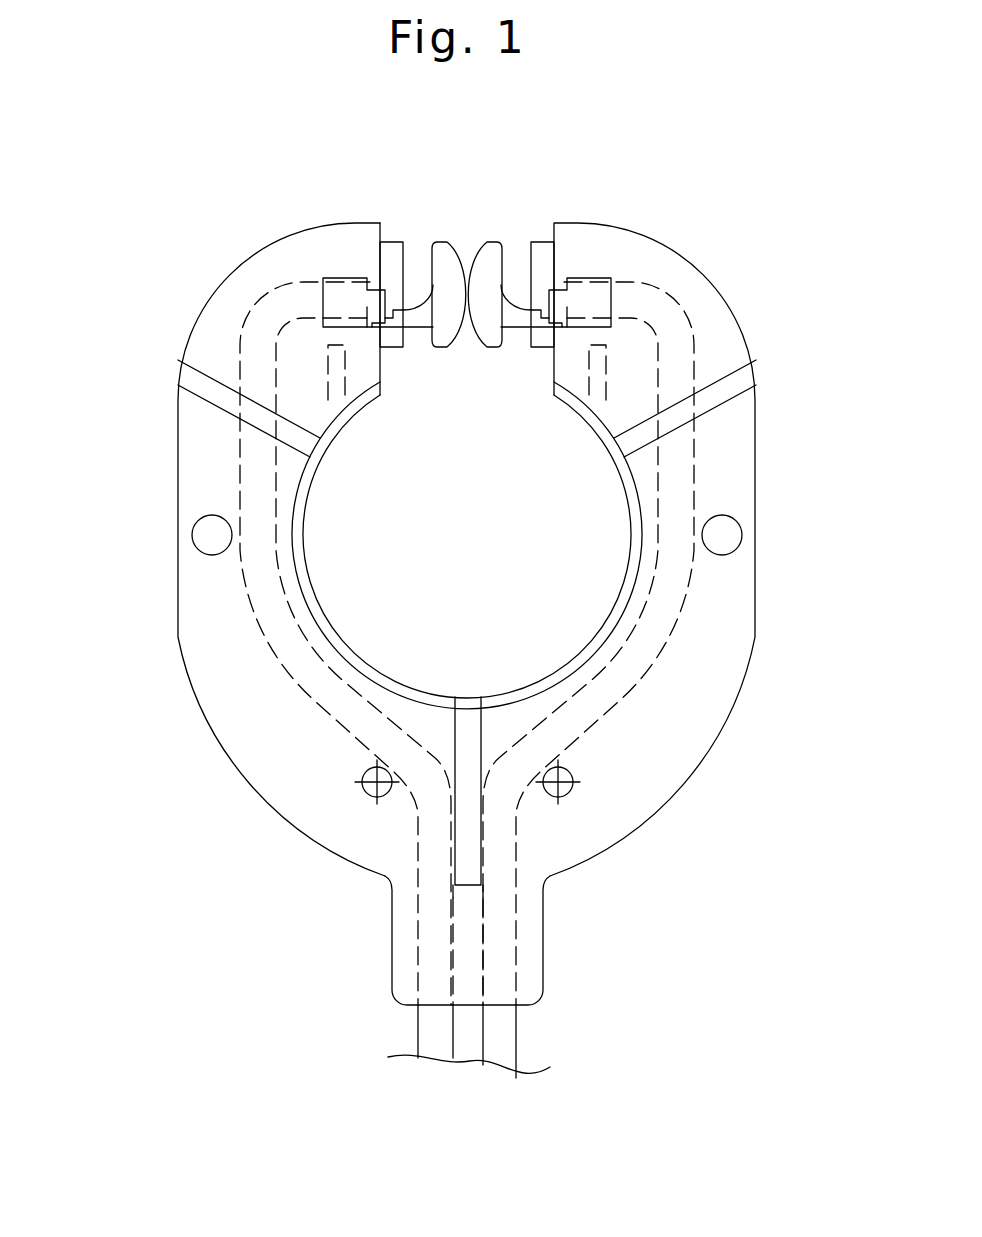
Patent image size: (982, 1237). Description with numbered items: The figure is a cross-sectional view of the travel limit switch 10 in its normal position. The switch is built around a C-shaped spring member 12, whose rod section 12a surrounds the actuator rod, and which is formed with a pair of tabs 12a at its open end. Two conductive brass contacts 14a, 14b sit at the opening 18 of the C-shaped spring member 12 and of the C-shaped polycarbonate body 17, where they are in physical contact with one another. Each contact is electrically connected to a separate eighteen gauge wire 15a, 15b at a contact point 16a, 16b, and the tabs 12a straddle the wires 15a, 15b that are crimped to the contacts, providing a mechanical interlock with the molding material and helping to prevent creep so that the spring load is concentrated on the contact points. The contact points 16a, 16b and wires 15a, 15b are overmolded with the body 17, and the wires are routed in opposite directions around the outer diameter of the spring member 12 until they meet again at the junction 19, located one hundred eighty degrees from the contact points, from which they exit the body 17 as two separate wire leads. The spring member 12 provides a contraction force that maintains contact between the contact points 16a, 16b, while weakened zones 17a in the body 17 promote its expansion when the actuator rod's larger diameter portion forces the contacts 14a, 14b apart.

The travel limit switch 10 is at (693, 235).
The C-shaped spring member 12 is at (570, 660).
The rod section and tabs of spring member 12a is at (300, 537).
The first conductive contact 14a is at (443, 240).
The second conductive contact 14b is at (491, 240).
The first wire 15a is at (263, 306).
The second wire 15b is at (671, 306).
The first contact point 16a is at (348, 297).
The second contact point 16b is at (586, 297).
The polycarbonate body 17 is at (725, 614).
The weakened zones 17a is at (215, 395).
The opening 18 is at (470, 363).
The junction 19 is at (562, 885).